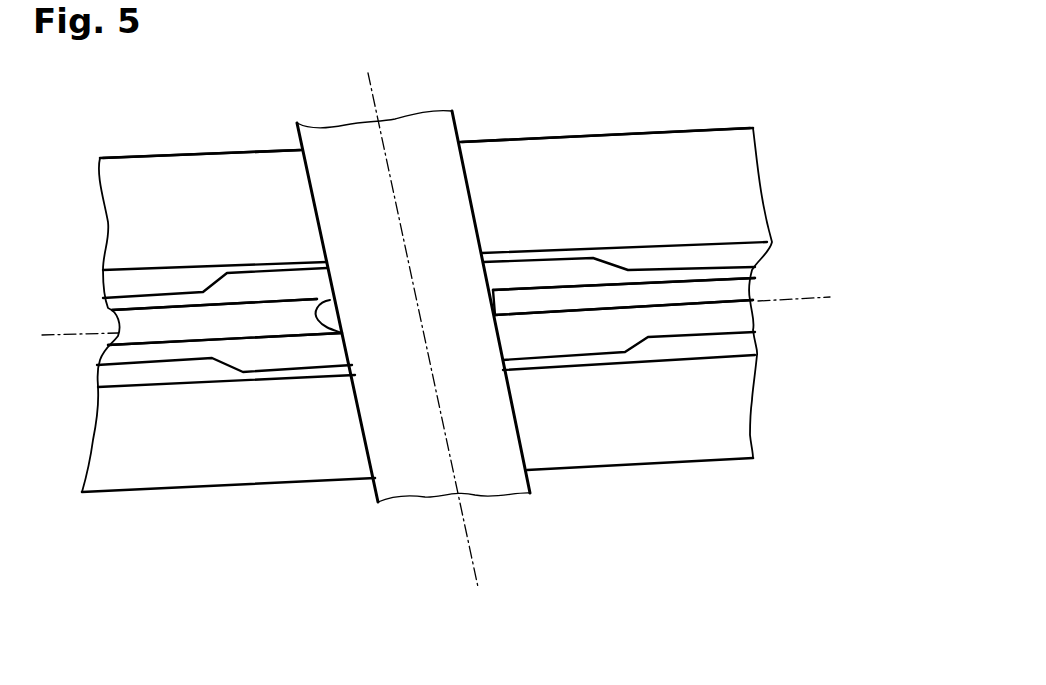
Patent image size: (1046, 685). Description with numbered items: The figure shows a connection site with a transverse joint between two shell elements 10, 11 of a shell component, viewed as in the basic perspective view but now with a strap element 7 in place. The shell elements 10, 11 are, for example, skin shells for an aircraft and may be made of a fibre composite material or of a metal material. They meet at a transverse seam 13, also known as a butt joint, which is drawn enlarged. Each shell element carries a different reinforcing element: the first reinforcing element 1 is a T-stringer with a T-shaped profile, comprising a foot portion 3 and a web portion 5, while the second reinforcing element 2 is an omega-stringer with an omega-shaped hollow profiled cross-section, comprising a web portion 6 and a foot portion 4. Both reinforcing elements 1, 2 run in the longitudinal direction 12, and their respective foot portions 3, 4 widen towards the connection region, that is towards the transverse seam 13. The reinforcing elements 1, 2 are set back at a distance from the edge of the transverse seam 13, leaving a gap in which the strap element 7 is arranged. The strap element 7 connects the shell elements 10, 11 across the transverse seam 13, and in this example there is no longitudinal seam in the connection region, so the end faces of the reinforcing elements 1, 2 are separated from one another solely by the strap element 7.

The first reinforcing element 1 is at (660, 282).
The second reinforcing element 2 is at (173, 283).
The foot portion 3 is at (507, 280).
The foot portion 4 is at (300, 287).
The web portion 5 is at (537, 297).
The web portion 6 is at (307, 317).
The strap element 7 is at (410, 458).
The shell element 10 is at (505, 140).
The shell element 11 is at (234, 152).
The longitudinal direction 12 is at (53, 336).
The transverse seam 13 is at (473, 552).